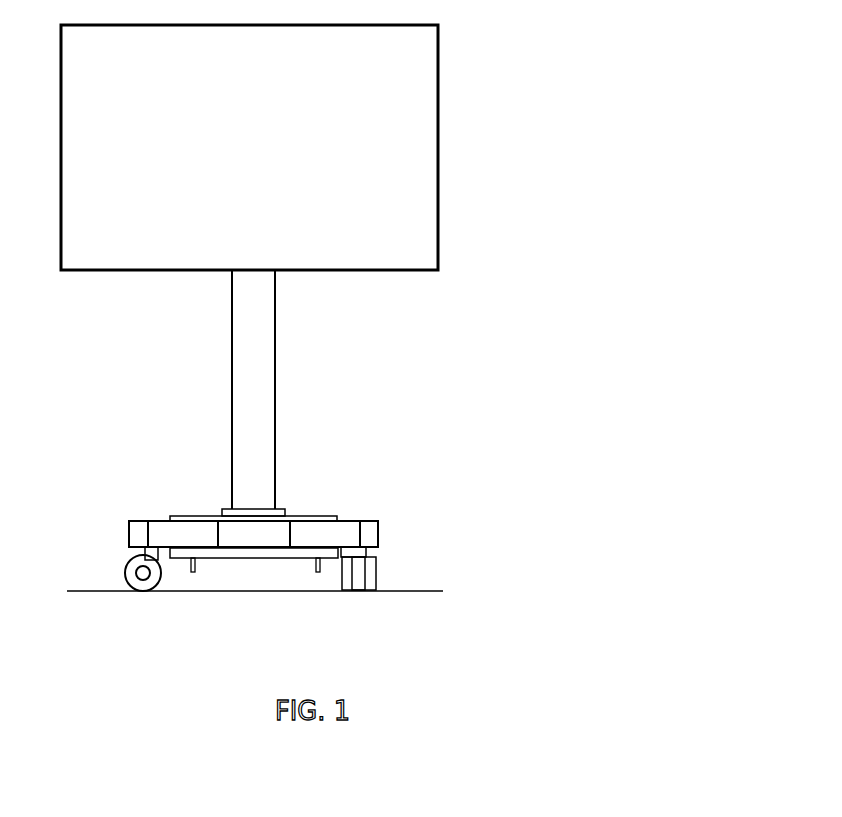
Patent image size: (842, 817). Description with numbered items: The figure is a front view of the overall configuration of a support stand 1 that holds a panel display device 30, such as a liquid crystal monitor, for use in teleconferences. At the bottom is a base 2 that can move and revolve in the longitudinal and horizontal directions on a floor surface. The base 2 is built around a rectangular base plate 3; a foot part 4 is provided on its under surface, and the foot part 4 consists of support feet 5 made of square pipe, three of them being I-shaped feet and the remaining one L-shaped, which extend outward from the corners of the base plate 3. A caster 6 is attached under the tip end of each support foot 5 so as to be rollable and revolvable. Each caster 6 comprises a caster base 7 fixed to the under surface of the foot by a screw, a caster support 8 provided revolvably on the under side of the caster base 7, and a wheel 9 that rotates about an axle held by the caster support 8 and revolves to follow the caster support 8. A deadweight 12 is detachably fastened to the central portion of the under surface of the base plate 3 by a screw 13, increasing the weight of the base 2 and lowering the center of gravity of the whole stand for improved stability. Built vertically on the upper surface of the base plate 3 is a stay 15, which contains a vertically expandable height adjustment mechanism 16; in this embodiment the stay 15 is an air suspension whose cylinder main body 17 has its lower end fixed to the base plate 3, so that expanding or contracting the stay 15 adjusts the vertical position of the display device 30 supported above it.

The panel display device 30 is at (428, 90).
The support stand 1 is at (315, 410).
The stay 15 is at (282, 337).
The height adjustment mechanism 16 is at (232, 400).
The cylinder main body 17 is at (267, 366).
The foot part 4 is at (153, 507).
The support feet 5 is at (140, 533).
The base 2 is at (193, 507).
The base plate 3 is at (317, 509).
The deadweight 12 is at (245, 558).
The screw 13 is at (193, 572).
The caster base 7 is at (368, 555).
The casters 6 is at (398, 604).
The wheel 9 is at (342, 578).
The caster support 8 is at (360, 580).